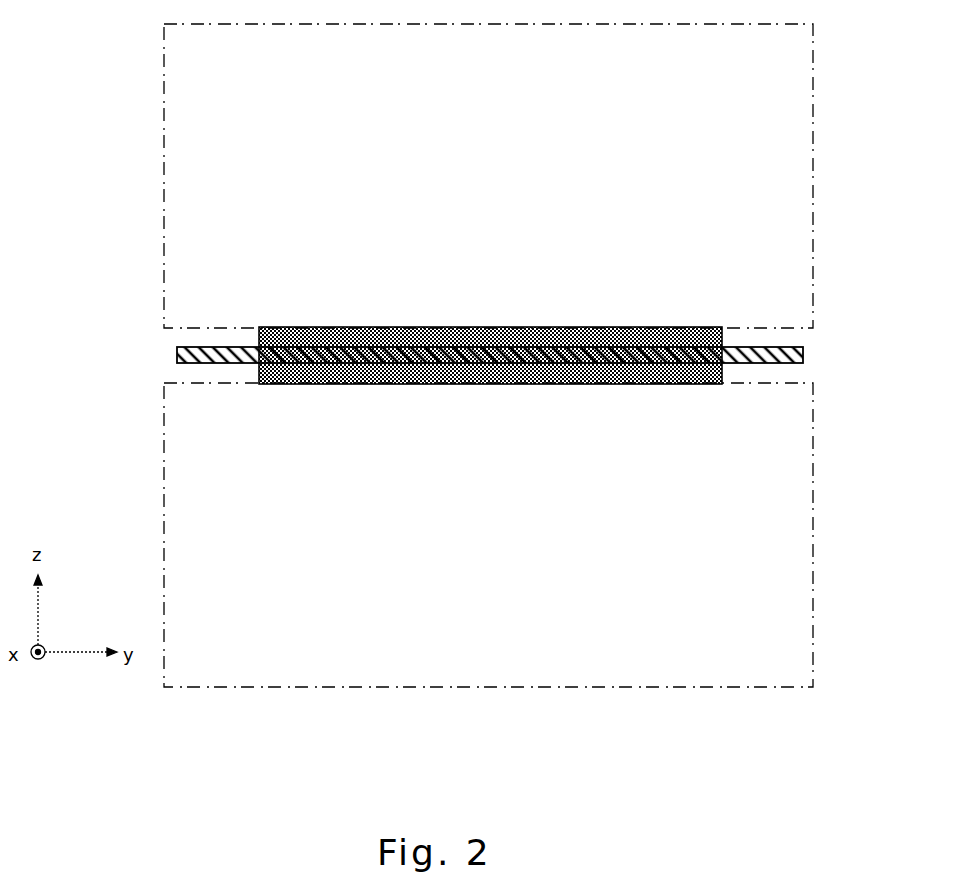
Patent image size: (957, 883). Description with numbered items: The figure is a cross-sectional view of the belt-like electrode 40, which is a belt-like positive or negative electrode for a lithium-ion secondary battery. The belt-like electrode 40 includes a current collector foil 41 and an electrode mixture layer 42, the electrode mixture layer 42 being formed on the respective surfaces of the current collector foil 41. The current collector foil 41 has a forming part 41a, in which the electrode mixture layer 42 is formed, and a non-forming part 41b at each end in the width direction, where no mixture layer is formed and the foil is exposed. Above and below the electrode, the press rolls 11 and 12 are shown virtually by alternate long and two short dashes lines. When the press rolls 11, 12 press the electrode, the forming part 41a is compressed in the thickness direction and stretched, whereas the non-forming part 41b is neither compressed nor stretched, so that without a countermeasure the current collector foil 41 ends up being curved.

The press roll 11 is at (818, 160).
The press roll 12 is at (817, 541).
The belt-like electrode 40 is at (547, 306).
The current collector foil 41 is at (490, 295).
The forming part 41a is at (490, 320).
The non-forming part 41b is at (760, 347).
The electrode mixture layer 42 is at (530, 326).